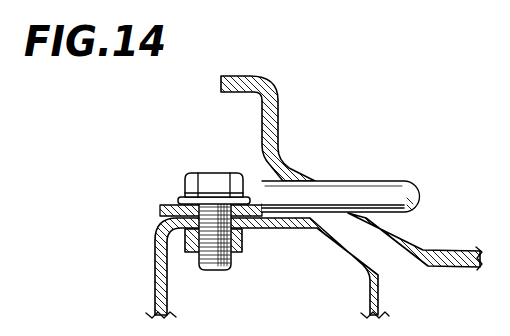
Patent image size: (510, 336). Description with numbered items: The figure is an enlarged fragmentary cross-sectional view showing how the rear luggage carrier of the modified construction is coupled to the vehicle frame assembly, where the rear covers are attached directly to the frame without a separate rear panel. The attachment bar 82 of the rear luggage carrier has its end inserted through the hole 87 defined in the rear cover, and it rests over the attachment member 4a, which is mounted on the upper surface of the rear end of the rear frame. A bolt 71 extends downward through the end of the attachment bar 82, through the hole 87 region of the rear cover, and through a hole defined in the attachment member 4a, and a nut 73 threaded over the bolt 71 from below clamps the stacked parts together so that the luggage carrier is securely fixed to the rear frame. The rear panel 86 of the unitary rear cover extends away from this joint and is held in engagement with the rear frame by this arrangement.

The attachment member 4a is at (160, 286).
The bolt 71 is at (213, 172).
The nut 73 is at (242, 236).
The attachment bar 82 is at (373, 182).
The rear panel 86 is at (461, 251).
The hole 87 is at (305, 172).